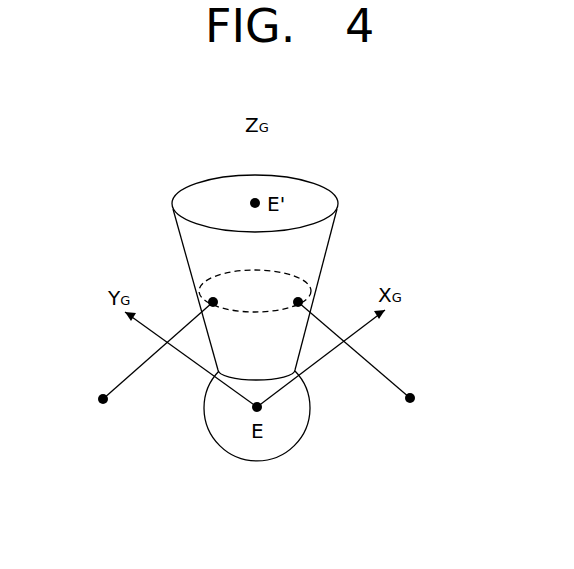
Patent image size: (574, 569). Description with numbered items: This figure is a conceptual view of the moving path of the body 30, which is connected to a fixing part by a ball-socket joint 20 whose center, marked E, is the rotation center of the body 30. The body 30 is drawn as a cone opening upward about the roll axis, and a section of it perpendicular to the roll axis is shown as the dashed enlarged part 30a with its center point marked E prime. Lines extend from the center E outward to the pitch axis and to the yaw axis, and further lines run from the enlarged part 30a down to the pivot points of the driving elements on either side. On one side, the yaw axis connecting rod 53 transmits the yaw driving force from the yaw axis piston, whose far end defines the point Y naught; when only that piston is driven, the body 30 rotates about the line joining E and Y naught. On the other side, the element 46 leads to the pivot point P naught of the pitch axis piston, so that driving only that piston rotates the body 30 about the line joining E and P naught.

The body 30 is at (177, 230).
The enlarged part 30a is at (293, 277).
The yaw axis connecting rod 53 is at (127, 377).
The line to P0 46 is at (388, 377).
The ball-socket joint 20 is at (225, 450).